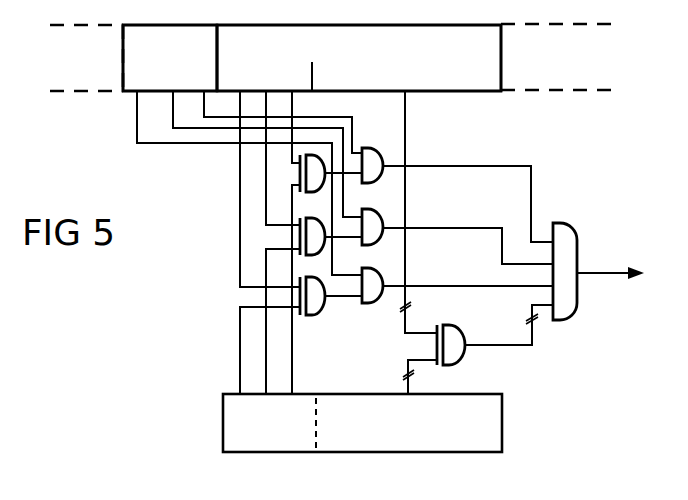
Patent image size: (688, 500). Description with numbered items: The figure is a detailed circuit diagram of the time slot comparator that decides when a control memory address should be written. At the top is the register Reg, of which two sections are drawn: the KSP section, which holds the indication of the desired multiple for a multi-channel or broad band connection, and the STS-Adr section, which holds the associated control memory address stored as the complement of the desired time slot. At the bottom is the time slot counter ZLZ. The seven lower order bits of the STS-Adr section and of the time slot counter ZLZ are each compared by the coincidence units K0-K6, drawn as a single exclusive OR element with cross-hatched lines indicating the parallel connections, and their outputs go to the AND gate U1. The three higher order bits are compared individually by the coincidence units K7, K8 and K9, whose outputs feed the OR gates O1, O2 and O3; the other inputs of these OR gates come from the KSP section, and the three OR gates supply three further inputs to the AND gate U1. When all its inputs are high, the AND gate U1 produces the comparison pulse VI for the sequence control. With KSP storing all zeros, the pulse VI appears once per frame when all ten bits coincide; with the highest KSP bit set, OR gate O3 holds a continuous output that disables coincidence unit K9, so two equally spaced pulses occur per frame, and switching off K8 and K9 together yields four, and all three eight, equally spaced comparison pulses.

The register Reg is at (331, 57).
The KSP section of the register KSP is at (171, 60).
The STS address section of the register STS-Adr is at (359, 60).
The coincidence unit K7 is at (298, 173).
The coincidence unit K8 is at (283, 236).
The coincidence unit K9 is at (315, 314).
The OR gate O1 is at (373, 148).
The OR gate O2 is at (376, 215).
The OR gate O3 is at (374, 305).
The coincidence units K0 through K6 K0-K6 is at (454, 328).
The AND gate U1 is at (565, 256).
The comparison pulse VI is at (624, 275).
The time slot counter ZLZ is at (362, 439).